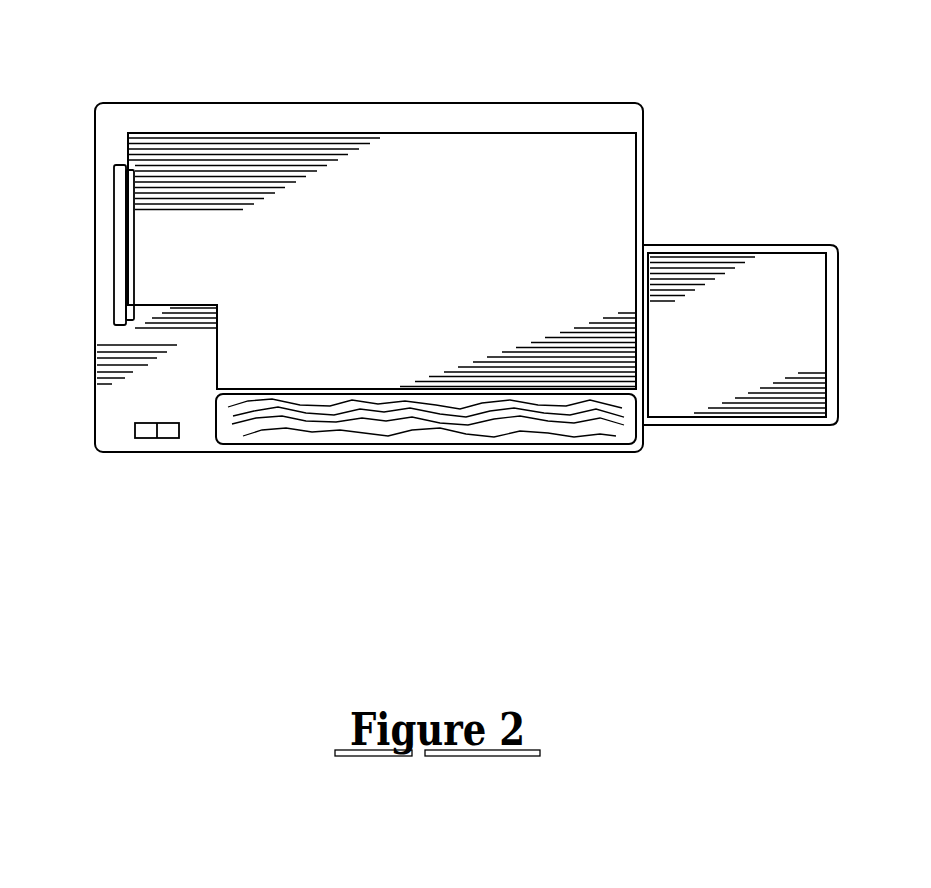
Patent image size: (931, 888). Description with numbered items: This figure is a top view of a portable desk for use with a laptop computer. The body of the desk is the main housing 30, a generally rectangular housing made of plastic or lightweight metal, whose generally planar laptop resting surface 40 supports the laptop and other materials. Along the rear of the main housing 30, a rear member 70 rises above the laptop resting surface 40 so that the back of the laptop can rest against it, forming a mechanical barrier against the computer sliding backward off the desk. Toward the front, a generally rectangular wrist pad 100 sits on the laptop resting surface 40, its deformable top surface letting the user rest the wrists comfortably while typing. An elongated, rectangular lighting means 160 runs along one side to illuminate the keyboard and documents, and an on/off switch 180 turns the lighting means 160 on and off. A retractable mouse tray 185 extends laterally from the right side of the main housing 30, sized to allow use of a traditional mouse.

The main housing 30 is at (643, 452).
The laptop resting surface 40 is at (429, 270).
The rear member 70 is at (382, 125).
The wrist pad 100 is at (376, 424).
The lighting means 160 is at (133, 183).
The on/off switch 180 is at (157, 438).
The retractable mouse tray 185 is at (772, 298).